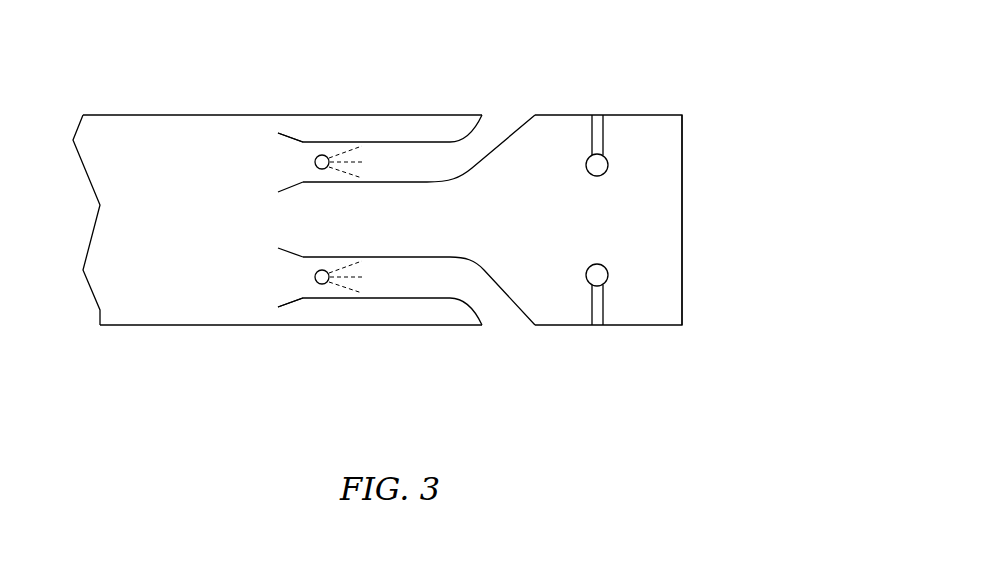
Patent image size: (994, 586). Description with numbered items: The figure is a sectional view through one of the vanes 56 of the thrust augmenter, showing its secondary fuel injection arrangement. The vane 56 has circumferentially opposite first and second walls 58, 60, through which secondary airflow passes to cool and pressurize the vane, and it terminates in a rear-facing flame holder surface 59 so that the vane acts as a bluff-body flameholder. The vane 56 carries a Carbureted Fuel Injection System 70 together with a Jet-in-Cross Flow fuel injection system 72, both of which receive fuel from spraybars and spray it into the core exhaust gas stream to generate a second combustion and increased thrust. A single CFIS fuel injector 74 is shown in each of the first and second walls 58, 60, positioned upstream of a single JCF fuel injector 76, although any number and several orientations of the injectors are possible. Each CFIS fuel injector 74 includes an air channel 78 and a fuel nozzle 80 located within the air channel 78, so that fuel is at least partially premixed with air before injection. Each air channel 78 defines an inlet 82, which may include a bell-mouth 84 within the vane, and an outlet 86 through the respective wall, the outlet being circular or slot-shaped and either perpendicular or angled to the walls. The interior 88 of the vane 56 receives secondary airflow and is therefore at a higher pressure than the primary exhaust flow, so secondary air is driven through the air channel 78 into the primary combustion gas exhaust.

The vane 56 is at (703, 91).
The first wall 58 is at (202, 115).
The rear-facing flame holder surface 59 is at (682, 252).
The second wall 60 is at (237, 325).
The Carbureted Fuel Injection System (CFIS) 70 is at (373, 100).
The Jet-in-Cross Flow (JCF) fuel injection system 72 is at (601, 112).
The CFIS fuel injector 74 is at (392, 132).
The JCF fuel injector 76 is at (600, 272).
The air channel 78 is at (425, 183).
The fuel nozzle 80 is at (323, 168).
The inlet 82 is at (283, 162).
The bell-mouth 84 is at (295, 136).
The outlet 86 is at (508, 118).
The interior 88 is at (157, 179).